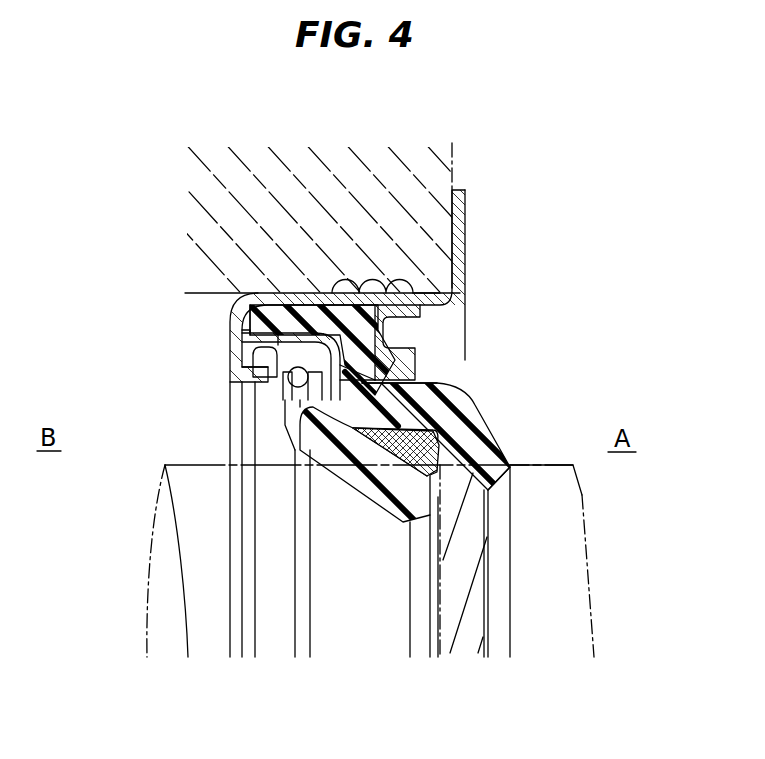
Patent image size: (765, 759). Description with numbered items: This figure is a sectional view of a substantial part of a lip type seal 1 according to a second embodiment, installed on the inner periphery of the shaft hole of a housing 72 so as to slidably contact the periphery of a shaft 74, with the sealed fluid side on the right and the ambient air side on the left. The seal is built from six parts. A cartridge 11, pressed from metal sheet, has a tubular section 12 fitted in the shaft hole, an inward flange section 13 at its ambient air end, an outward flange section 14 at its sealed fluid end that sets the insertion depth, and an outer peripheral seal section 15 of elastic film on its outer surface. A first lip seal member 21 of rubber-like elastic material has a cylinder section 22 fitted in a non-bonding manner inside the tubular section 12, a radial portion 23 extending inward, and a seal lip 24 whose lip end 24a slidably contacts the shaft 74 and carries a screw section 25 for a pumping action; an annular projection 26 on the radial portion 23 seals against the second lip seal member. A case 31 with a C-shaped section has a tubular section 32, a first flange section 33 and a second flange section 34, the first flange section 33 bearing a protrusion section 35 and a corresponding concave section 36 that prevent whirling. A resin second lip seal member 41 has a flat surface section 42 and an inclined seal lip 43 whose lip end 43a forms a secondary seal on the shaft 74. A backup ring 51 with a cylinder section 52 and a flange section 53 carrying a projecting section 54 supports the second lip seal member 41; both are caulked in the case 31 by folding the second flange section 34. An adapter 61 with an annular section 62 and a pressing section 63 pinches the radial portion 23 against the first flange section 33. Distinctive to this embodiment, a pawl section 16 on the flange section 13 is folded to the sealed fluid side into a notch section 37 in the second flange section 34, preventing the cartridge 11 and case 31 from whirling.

The lip type seal 1 is at (480, 228).
The cartridge 11 is at (466, 222).
The tubular section 12 is at (301, 293).
The flange section 13 is at (232, 328).
The outward flange section 14 is at (466, 197).
The outer peripheral seal section 15 is at (374, 280).
The pawl section 16 is at (240, 370).
The first lip seal member 21 is at (253, 295).
The cylinder section 22 is at (293, 293).
The radial portion 23 is at (368, 378).
The seal lip 24 is at (440, 408).
The lip end 24a is at (493, 470).
The screw section 25 is at (452, 637).
The annular projection 26 is at (292, 445).
The case 31 is at (232, 300).
The tubular section 32 is at (276, 293).
The first flange section 33 is at (385, 338).
The second flange section 34 is at (236, 350).
The protrusion section 35 is at (240, 432).
The concave section 36 is at (385, 393).
The notch section 37 is at (238, 385).
The second lip seal member 41 is at (346, 473).
The flat surface section 42 is at (321, 293).
The seal lip 43 is at (372, 478).
The lip end 43a is at (406, 508).
The backup ring 51 is at (240, 418).
The cylinder section 52 is at (240, 405).
The flange section 53 is at (245, 443).
The projecting section 54 is at (235, 425).
The adapter 61 is at (455, 298).
The annular section 62 is at (412, 280).
The pressing section 63 is at (428, 315).
The housing 72 is at (460, 163).
The shaft 74 is at (535, 630).